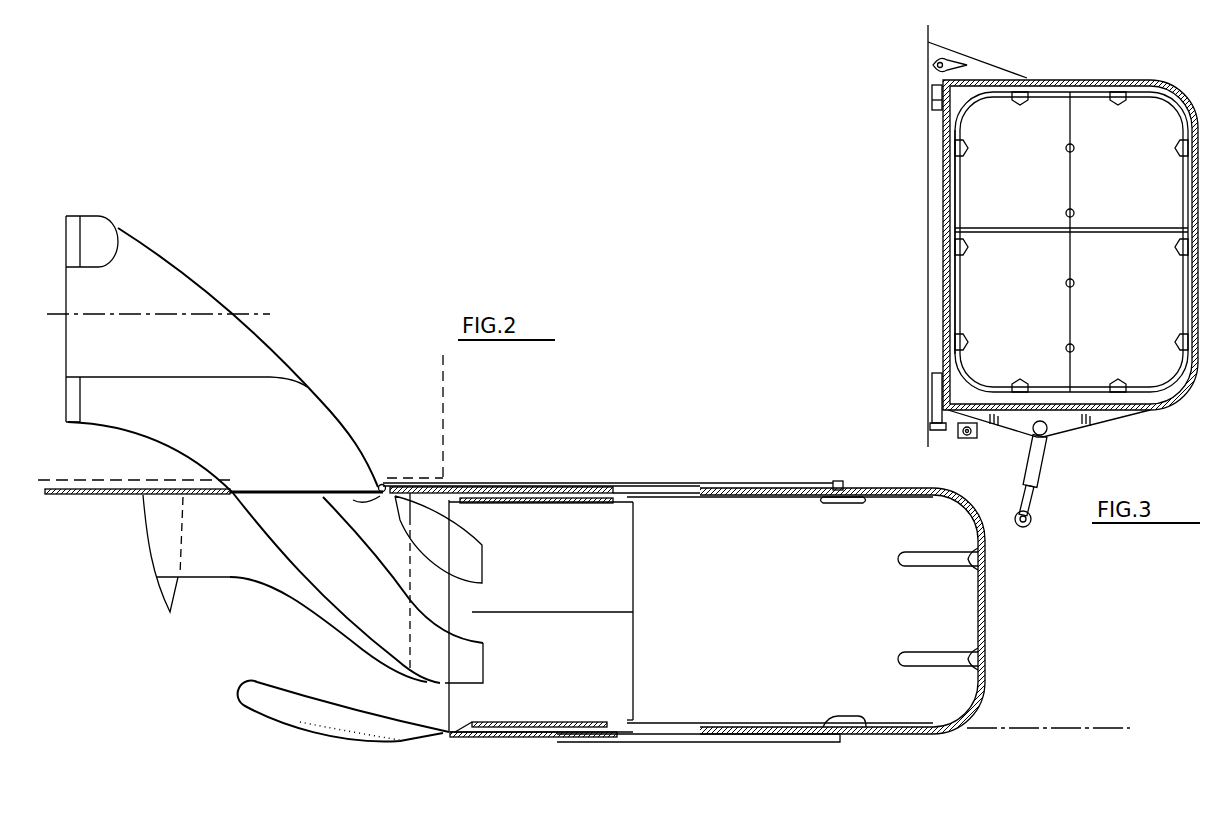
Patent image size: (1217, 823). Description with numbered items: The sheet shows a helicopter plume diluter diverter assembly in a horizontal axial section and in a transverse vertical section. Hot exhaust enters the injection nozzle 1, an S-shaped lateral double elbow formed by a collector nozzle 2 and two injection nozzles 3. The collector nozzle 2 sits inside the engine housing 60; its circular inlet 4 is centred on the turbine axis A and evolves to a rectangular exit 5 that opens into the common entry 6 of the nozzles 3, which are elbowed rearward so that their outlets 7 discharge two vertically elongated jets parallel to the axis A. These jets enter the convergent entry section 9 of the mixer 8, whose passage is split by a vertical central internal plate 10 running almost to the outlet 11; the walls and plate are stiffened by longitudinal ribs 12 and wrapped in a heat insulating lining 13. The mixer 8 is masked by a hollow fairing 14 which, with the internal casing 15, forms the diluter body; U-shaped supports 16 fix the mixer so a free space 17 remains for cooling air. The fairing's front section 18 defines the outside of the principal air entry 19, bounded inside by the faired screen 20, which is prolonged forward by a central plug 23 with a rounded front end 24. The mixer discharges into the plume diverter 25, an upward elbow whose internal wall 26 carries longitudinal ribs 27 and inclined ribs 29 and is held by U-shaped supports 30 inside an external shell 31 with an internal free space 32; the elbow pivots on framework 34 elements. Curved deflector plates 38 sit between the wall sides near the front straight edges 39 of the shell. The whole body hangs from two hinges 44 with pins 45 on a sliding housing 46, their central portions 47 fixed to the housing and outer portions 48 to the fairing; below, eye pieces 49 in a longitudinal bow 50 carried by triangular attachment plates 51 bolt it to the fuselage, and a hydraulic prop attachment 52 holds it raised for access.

In FIG. 2, the injection nozzle 1 is at (360, 413).
In FIG. 2, the collector nozzle 2 is at (300, 390).
In FIG. 2, the injection nozzles 3 is at (422, 470).
In FIG. 2, the inlet 4 is at (67, 306).
In FIG. 2, the exit 5 is at (303, 492).
In FIG. 2, the entry 6 is at (380, 486).
In FIG. 2, the outlets 7 is at (477, 557).
In FIG. 2, the mixer 8 is at (523, 707).
In FIG. 3, the mixer 8 is at (960, 287).
In FIG. 2, the entry section 9 is at (473, 707).
In FIG. 2, the central internal plate 10 is at (602, 608).
In FIG. 3, the central internal plate 10 is at (1072, 192).
In FIG. 2, the outlet 11 is at (633, 675).
In FIG. 3, the longitudinal ribs 12 is at (1068, 345).
In FIG. 2, the heat insulating lining 13 is at (495, 498).
In FIG. 3, the heat insulating lining 13 is at (1150, 412).
In FIG. 2, the fairing 14 is at (363, 733).
In FIG. 3, the fairing 14 is at (1188, 392).
In FIG. 2, the internal casing 15 is at (130, 490).
In FIG. 3, the internal casing 15 is at (945, 193).
In FIG. 2, the supports 16 is at (558, 496).
In FIG. 3, the supports 16 is at (948, 342).
In FIG. 2, the free space 17 is at (473, 487).
In FIG. 3, the free space 17 is at (1183, 292).
In FIG. 2, the front section 18 is at (300, 723).
In FIG. 2, the principal air entry 19 is at (263, 651).
In FIG. 2, the faired screen 20 is at (317, 620).
In FIG. 2, the central plug 23 is at (230, 578).
In FIG. 2, the front end 24 is at (148, 557).
In FIG. 2, the plume diverter 25 is at (936, 745).
In FIG. 2, the internal wall 26 is at (980, 535).
In FIG. 2, the longitudinal ribs 27 is at (937, 557).
In FIG. 2, the inclined ribs 29 is at (845, 505).
In FIG. 2, the U-shaped supports 30 is at (837, 480).
In FIG. 2, the external shell 31 is at (985, 685).
In FIG. 2, the internal free space 32 is at (965, 704).
In FIG. 2, the framework 34 is at (695, 487).
In FIG. 3, the deflector plates 38 is at (1023, 228).
In FIG. 2, the front straight edges 39 is at (688, 500).
In FIG. 3, the hinges 44 is at (951, 47).
In FIG. 3, the pins 45 is at (933, 73).
In FIG. 3, the housing 46 is at (885, 39).
In FIG. 3, the central portions 47 is at (930, 56).
In FIG. 3, the outer portions 48 is at (993, 72).
In FIG. 3, the eye pieces 49 is at (1032, 518).
In FIG. 3, the longitudinal bow 50 is at (1047, 460).
In FIG. 3, the attachment plates 51 is at (1103, 417).
In FIG. 3, the hydraulic prop attachment 52 is at (967, 438).
In FIG. 2, the housing 60 is at (443, 408).
In FIG. 2, the axis A is at (250, 313).